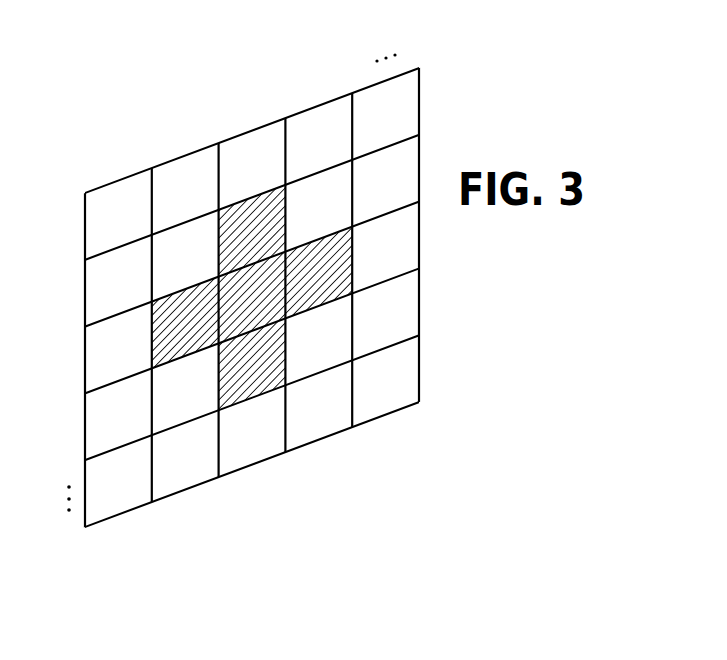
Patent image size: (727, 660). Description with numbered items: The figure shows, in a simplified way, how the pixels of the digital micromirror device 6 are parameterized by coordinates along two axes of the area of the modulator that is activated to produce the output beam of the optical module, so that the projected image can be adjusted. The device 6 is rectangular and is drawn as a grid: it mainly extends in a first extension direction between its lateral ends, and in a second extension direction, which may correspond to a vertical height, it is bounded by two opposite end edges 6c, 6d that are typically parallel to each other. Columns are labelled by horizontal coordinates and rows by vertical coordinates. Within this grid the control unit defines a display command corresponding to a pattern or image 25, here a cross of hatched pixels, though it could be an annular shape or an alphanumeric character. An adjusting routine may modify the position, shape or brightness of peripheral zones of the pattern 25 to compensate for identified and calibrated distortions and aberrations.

The digital micromirror device 6 is at (279, 296).
The end edge 6c is at (252, 464).
The end edge 6d is at (252, 130).
The pattern or image 25 is at (252, 298).